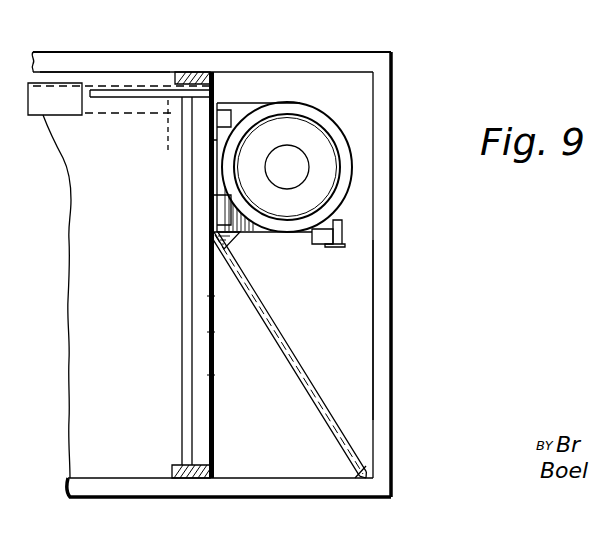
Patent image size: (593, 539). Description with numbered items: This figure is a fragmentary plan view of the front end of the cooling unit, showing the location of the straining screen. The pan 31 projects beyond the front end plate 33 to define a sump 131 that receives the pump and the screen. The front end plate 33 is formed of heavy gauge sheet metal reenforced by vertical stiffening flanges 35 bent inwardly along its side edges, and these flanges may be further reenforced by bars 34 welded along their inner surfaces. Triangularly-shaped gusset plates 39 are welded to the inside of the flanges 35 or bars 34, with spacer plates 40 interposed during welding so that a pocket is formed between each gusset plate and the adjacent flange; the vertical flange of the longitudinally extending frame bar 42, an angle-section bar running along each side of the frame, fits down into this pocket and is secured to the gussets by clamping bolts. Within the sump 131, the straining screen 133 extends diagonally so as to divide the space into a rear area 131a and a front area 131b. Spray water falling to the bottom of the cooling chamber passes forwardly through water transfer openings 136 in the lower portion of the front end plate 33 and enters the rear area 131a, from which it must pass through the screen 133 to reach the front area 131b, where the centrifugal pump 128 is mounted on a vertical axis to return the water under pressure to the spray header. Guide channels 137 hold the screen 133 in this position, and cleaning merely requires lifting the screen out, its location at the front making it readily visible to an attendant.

The pan 31 is at (103, 56).
The front end plate 33 is at (209, 268).
The bars 34 is at (163, 70).
The vertical stiffening flanges 35 is at (187, 72).
The gusset plates 39 is at (177, 100).
The spacer plates 40 is at (215, 87).
The longitudinally extending frame bar 42 is at (48, 107).
The centrifugal pump 128 is at (352, 185).
The sump 131 is at (367, 98).
The rear area 131a is at (308, 435).
The front area 131b is at (344, 330).
The straining screen 133 is at (268, 317).
The water transfer openings 136 is at (207, 377).
The guide channels 137 is at (219, 238).